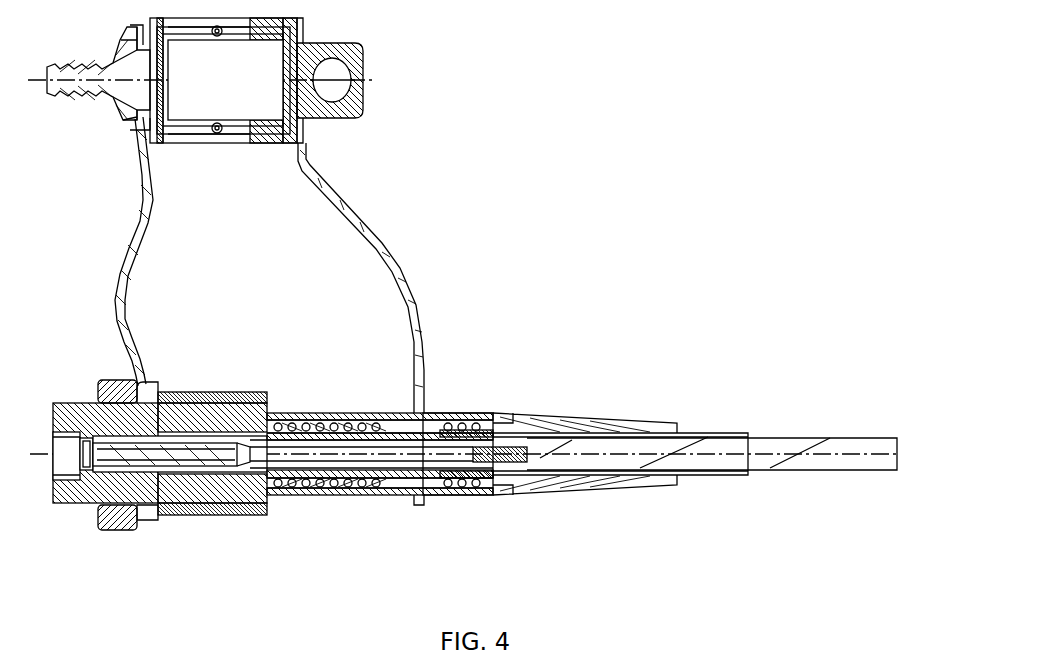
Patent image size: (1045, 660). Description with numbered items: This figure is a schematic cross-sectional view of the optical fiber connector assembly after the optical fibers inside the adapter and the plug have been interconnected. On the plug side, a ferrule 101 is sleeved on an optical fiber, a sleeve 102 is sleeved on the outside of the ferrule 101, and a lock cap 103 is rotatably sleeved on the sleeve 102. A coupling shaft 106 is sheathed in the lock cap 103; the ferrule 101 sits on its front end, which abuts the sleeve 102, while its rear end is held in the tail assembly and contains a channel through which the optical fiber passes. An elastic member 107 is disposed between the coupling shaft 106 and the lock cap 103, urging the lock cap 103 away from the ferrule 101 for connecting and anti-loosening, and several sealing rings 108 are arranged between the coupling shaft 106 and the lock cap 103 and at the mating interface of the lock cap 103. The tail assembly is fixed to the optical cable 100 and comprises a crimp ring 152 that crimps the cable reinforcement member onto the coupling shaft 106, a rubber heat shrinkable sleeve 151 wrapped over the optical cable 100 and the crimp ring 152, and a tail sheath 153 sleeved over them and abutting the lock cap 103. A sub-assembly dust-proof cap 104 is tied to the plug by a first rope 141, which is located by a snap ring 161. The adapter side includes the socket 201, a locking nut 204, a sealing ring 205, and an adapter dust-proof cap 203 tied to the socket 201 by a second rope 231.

The optical cable 100 is at (787, 442).
The ferrule 101 is at (200, 500).
The sleeve 102 is at (160, 483).
The lock cap 103 is at (268, 402).
The sub-assembly dust-proof cap 104 is at (335, 108).
The coupling shaft 106 is at (392, 488).
The elastic member 107 is at (328, 487).
The sealing ring 108 is at (183, 393).
The first rope 141 is at (402, 287).
The rubber heat shrinkable sleeve 151 is at (703, 433).
The crimp ring 152 is at (530, 497).
The tail sheath 153 is at (615, 427).
The snap ring 161 is at (432, 490).
The socket 201 is at (157, 393).
The adapter dust-proof cap 203 is at (155, 133).
The locking nut 204 is at (115, 380).
The sealing ring 205 is at (218, 133).
The second rope 231 is at (135, 307).